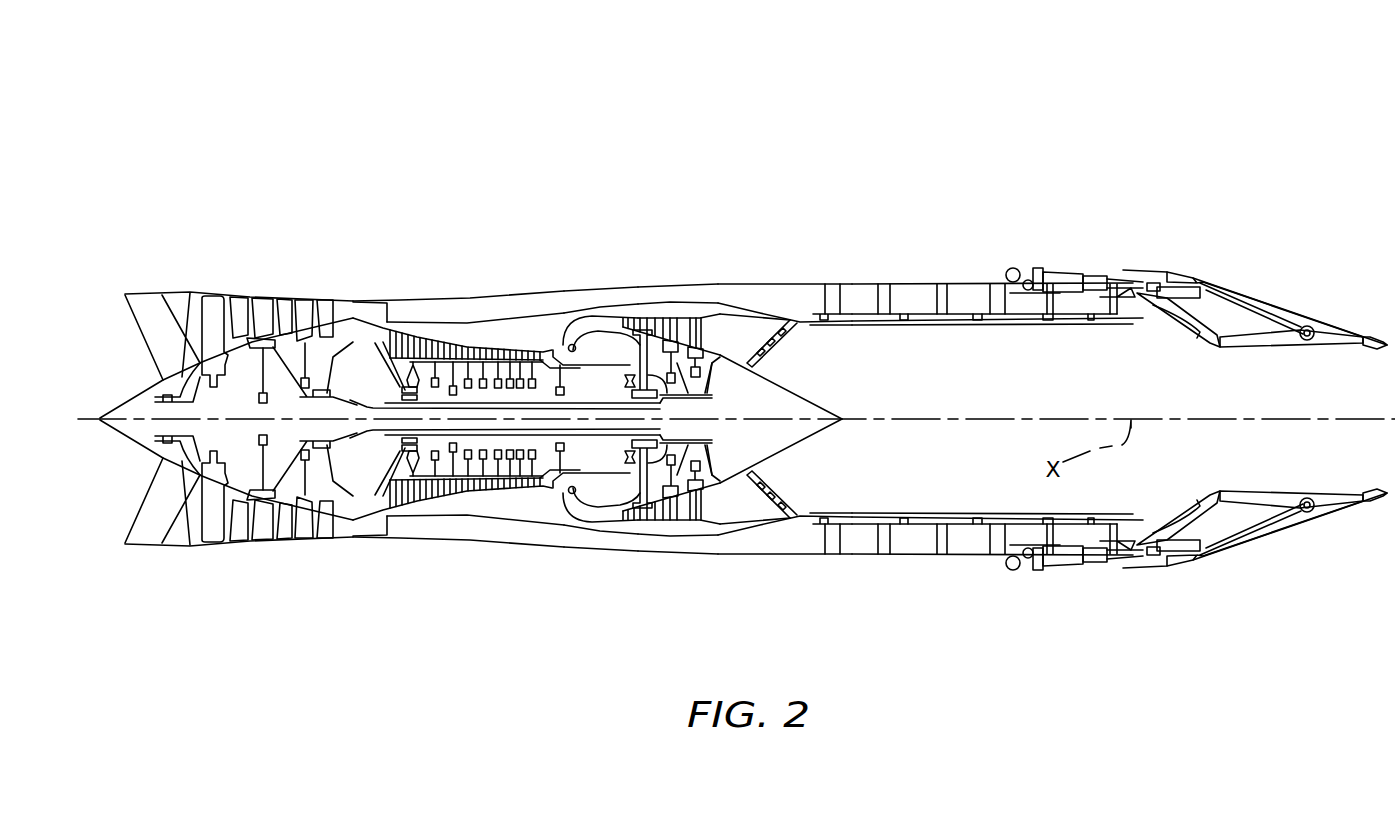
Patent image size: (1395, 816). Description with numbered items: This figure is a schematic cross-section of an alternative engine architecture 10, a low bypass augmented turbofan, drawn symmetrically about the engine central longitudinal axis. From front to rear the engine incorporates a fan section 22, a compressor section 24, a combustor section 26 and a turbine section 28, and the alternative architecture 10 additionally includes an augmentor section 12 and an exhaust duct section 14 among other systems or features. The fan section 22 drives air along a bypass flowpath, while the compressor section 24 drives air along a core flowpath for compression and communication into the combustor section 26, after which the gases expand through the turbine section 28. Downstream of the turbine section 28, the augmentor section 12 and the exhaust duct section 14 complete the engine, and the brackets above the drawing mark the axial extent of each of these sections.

The alternative engine architecture 10 is at (1033, 115).
The fan section 22 is at (125, 221).
The compressor section 24 is at (564, 221).
The combustor section 26 is at (638, 221).
The turbine section 28 is at (718, 221).
The augmentor section 12 is at (718, 221).
The exhaust duct section 14 is at (1387, 221).